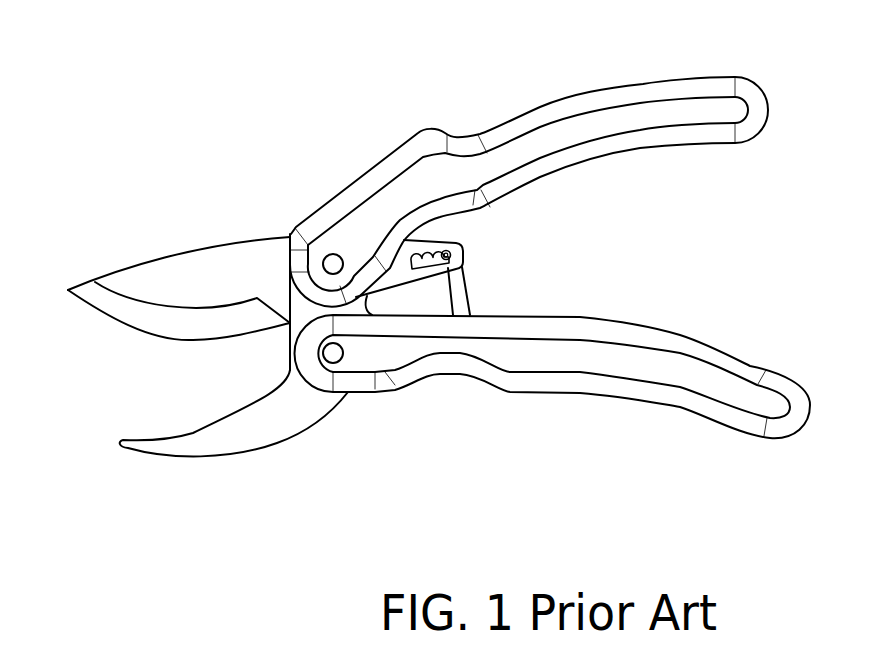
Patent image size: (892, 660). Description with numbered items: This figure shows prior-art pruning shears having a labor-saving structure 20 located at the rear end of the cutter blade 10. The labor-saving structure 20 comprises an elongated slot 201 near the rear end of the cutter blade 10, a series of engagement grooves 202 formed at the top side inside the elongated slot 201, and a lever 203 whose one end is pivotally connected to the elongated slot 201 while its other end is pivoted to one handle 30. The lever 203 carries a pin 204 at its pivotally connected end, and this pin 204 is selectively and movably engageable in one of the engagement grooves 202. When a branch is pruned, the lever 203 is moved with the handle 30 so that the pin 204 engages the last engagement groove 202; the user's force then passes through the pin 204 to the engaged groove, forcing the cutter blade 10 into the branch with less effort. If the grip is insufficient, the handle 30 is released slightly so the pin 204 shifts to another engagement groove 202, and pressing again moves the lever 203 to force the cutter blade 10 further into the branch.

The cutter blade 10 is at (203, 245).
The labor-saving structure 20 is at (466, 247).
The elongated slot 201 is at (412, 264).
The engagement grooves 202 is at (423, 252).
The lever 203 is at (466, 283).
The pin 204 is at (451, 258).
The handle 30 is at (643, 400).